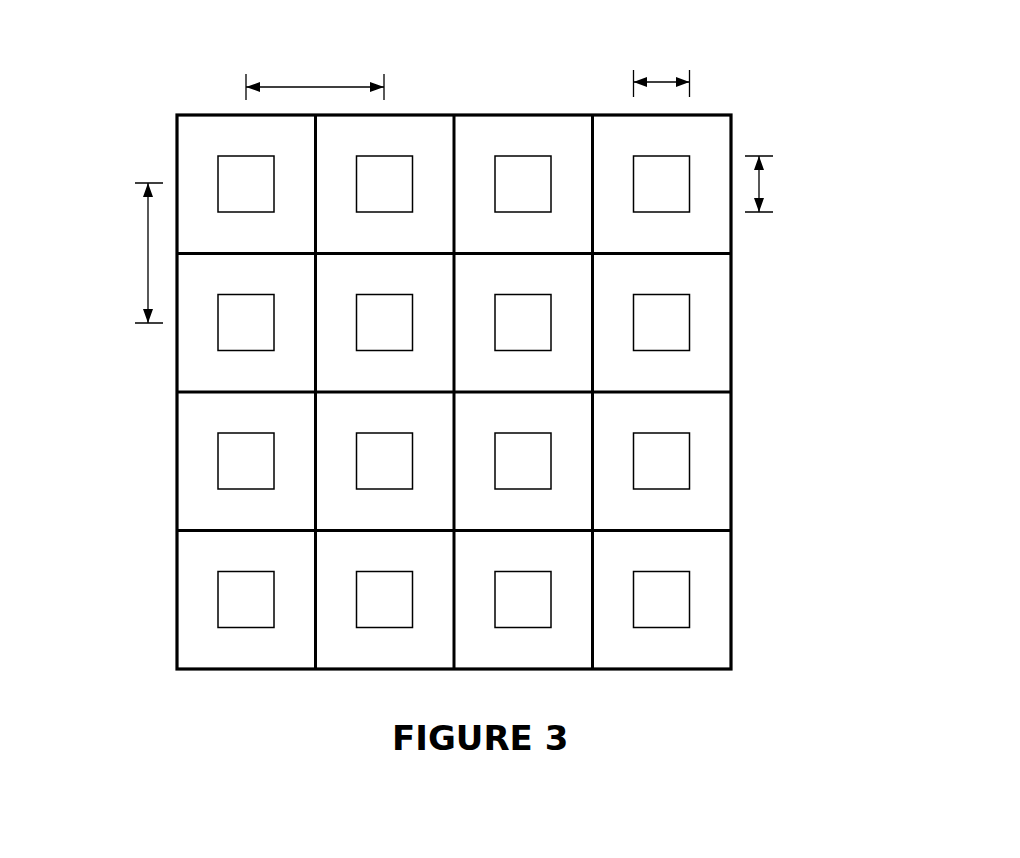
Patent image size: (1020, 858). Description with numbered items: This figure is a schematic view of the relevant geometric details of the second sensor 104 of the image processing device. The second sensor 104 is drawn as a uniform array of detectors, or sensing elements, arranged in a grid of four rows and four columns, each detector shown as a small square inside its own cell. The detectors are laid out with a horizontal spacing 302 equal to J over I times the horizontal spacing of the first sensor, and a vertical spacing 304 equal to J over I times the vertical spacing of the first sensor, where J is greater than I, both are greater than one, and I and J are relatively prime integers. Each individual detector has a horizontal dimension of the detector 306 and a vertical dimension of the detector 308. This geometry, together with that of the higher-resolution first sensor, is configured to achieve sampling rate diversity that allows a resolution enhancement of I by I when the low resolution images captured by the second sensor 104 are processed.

The second sensor 104 is at (675, 682).
The horizontal spacing 302 is at (313, 83).
The vertical spacing 304 is at (146, 253).
The horizontal dimension of the detector 306 is at (659, 80).
The vertical dimension of the detector 308 is at (760, 183).